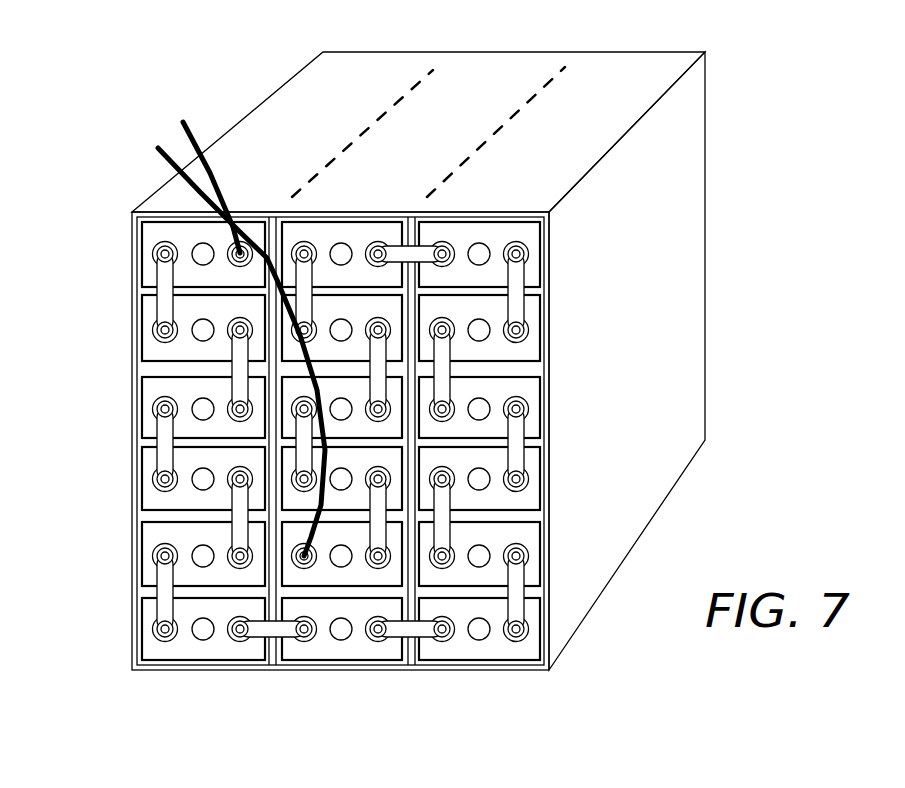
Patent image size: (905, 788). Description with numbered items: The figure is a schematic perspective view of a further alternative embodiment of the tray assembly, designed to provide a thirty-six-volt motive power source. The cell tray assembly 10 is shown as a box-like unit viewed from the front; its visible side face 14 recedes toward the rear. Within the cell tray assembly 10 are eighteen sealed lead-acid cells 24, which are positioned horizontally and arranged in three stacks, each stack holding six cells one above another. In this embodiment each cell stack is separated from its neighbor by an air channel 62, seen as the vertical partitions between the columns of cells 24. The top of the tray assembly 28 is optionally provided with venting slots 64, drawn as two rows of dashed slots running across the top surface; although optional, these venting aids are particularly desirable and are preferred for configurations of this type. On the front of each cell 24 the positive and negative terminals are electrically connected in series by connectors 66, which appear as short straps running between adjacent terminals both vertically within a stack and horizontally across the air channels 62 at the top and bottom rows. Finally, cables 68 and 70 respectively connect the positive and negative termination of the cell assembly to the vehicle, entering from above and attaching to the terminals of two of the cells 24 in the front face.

The cell tray assembly 10 is at (113, 236).
The side wall of case 14 is at (647, 343).
The sealed lead-acid cell 24 is at (180, 232).
The top of the tray assembly 28 is at (447, 138).
The air channel 62 is at (272, 393).
The venting slots 64 is at (556, 70).
The connectors 66 is at (163, 272).
The cable 68 is at (163, 147).
The cable 70 is at (197, 128).